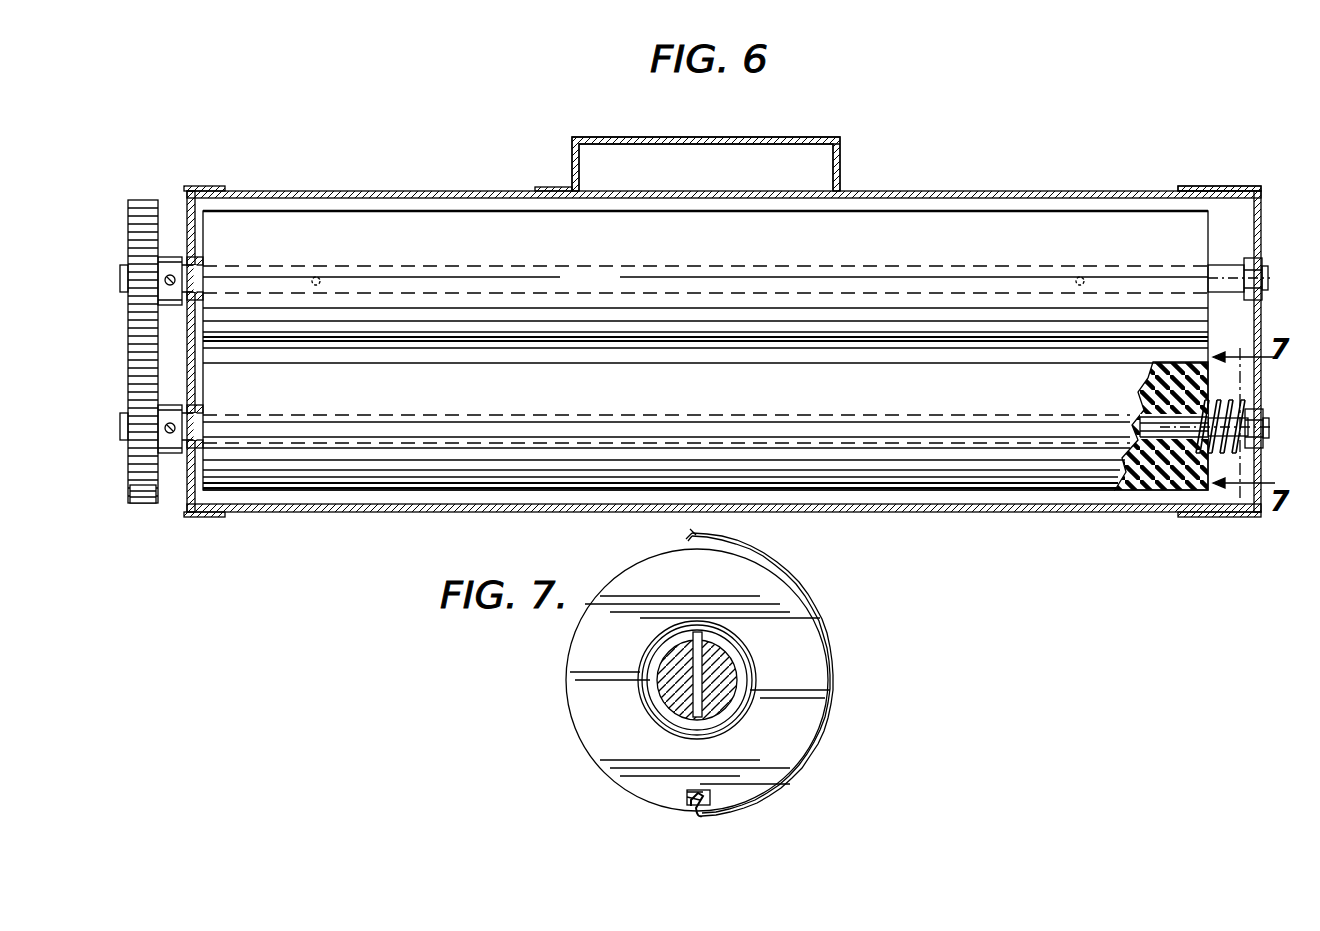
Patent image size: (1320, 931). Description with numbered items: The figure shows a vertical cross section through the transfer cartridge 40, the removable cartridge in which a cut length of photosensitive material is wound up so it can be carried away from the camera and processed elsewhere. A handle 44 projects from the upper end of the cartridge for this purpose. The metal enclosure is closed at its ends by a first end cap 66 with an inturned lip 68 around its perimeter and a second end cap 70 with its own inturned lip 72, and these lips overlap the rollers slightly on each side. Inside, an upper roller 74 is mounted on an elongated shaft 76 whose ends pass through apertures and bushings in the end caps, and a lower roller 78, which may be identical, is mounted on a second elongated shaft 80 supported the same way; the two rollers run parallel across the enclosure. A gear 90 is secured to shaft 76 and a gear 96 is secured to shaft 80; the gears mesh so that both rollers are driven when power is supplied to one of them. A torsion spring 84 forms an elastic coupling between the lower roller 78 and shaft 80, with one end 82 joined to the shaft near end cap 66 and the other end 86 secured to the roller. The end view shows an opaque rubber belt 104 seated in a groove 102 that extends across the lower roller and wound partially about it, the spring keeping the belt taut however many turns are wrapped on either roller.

In FIG. 6, the transfer cartridge 40 is at (362, 522).
In FIG. 6, the handle 44 is at (754, 140).
In FIG. 6, the first end cap 66 is at (1262, 232).
In FIG. 6, the inturned lip 68 is at (1212, 187).
In FIG. 6, the second end cap 70 is at (189, 222).
In FIG. 6, the inturned lip 72 is at (225, 517).
In FIG. 6, the upper roller 74 is at (397, 218).
In FIG. 6, the elongated shaft 76 is at (1227, 265).
In FIG. 6, the lower roller 78 is at (995, 480).
In FIG. 7, the lower roller 78 is at (805, 645).
In FIG. 7, the elongated shaft 80 is at (672, 700).
In FIG. 6, the spring end 82 is at (1268, 420).
In FIG. 6, the torsion spring 84 is at (1250, 447).
In FIG. 7, the torsion spring 84 is at (735, 728).
In FIG. 6, the spring end 86 is at (1183, 452).
In FIG. 6, the gear 90 is at (138, 207).
In FIG. 6, the gear 96 is at (138, 496).
In FIG. 7, the groove 102 is at (683, 783).
In FIG. 7, the opaque rubber belt 104 is at (757, 562).